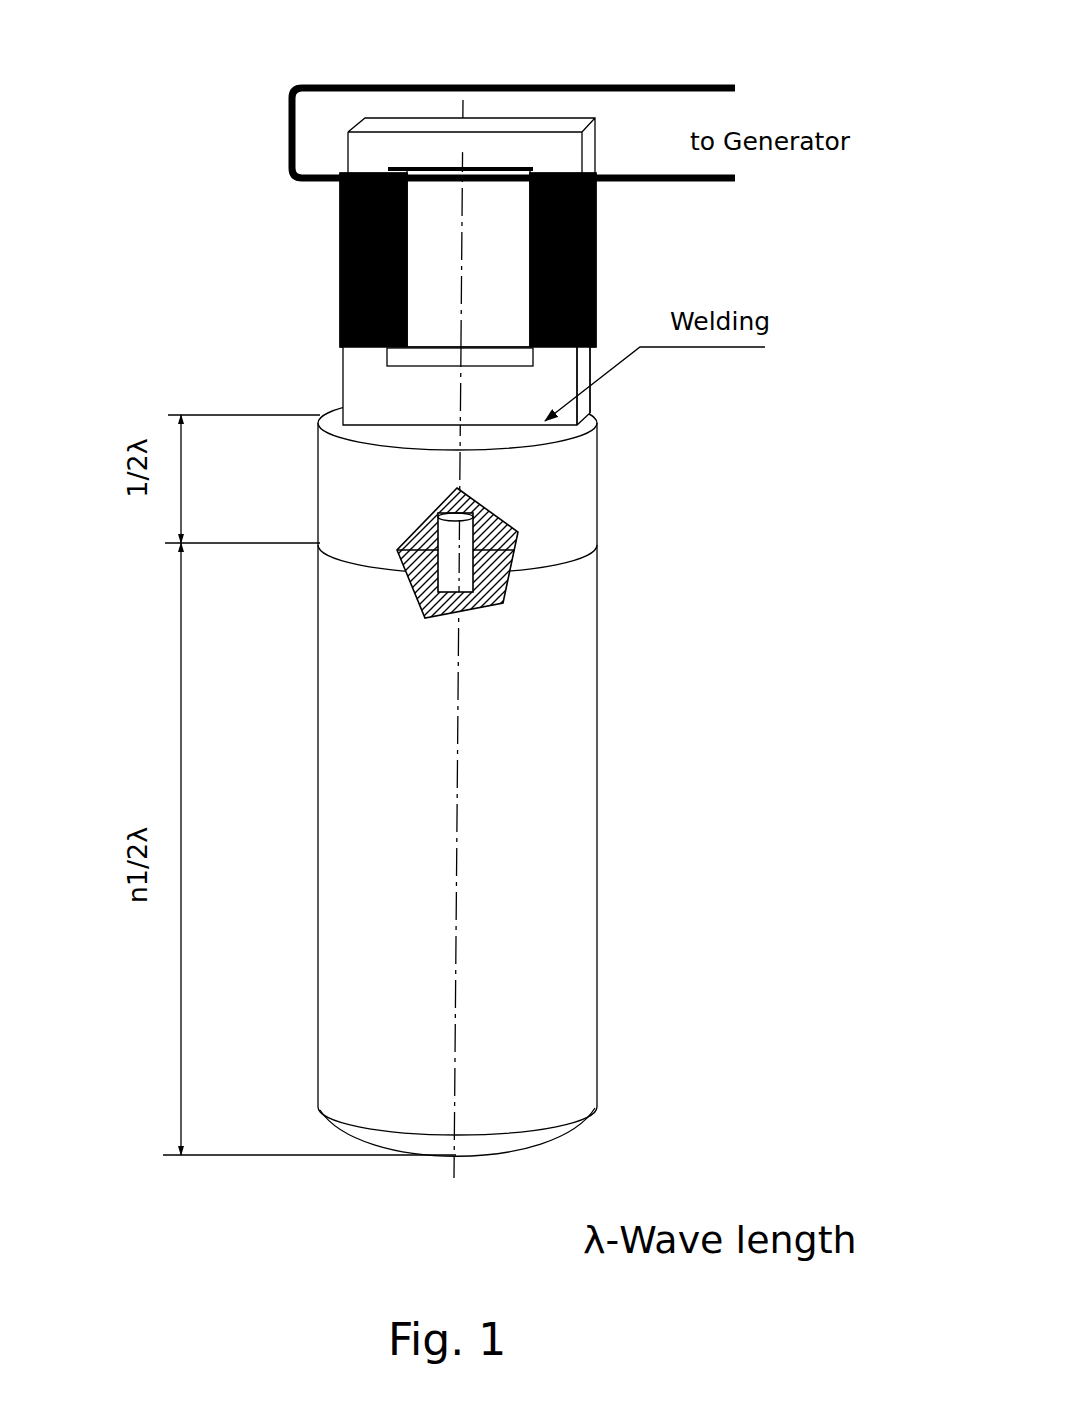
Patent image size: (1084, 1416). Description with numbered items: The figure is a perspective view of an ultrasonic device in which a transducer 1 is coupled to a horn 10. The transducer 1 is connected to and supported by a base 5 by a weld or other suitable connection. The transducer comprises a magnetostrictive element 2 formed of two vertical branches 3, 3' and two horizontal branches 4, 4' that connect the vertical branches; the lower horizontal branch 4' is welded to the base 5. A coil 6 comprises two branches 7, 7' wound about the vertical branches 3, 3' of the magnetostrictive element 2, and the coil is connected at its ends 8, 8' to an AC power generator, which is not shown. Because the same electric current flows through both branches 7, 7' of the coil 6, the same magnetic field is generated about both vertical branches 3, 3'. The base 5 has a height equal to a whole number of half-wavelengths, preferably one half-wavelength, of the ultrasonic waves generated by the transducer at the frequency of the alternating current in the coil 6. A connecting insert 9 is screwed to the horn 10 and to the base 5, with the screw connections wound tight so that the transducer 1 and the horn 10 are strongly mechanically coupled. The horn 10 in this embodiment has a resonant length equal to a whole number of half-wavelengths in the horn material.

The transducer 1 is at (342, 297).
The magnetostrictive element 2 is at (348, 150).
The vertical branch 3 is at (369, 328).
The vertical branch 3' is at (658, 395).
The horizontal branch 4 is at (454, 175).
The lower horizontal branch 4' is at (603, 537).
The base 5 is at (565, 478).
The coil 6 is at (597, 243).
The coil branch 7 is at (279, 236).
The coil branch 7' is at (640, 260).
The coil end 8 is at (516, 73).
The coil end 8' is at (541, 185).
The connecting insert 9 is at (490, 590).
The horn 10 is at (530, 920).